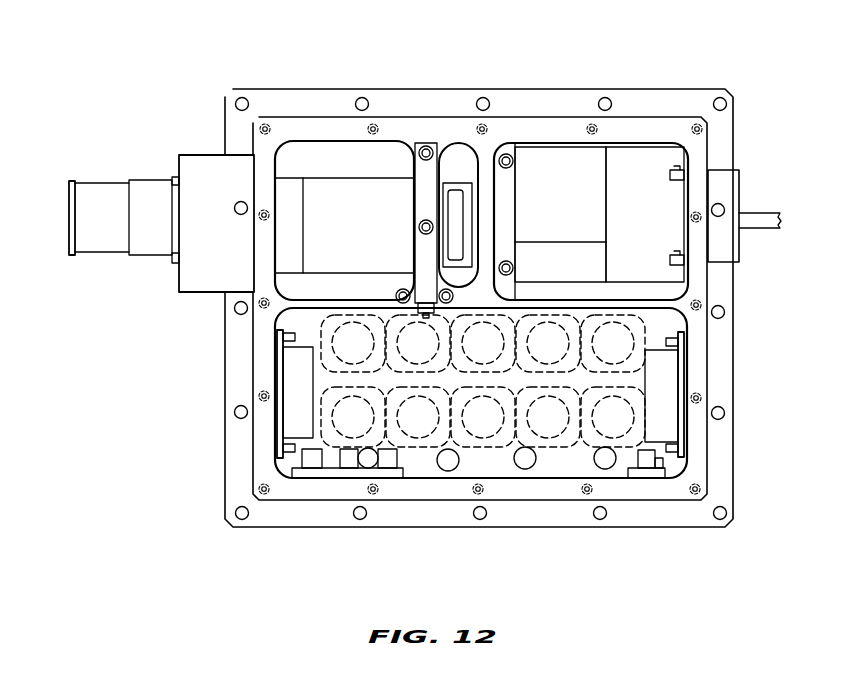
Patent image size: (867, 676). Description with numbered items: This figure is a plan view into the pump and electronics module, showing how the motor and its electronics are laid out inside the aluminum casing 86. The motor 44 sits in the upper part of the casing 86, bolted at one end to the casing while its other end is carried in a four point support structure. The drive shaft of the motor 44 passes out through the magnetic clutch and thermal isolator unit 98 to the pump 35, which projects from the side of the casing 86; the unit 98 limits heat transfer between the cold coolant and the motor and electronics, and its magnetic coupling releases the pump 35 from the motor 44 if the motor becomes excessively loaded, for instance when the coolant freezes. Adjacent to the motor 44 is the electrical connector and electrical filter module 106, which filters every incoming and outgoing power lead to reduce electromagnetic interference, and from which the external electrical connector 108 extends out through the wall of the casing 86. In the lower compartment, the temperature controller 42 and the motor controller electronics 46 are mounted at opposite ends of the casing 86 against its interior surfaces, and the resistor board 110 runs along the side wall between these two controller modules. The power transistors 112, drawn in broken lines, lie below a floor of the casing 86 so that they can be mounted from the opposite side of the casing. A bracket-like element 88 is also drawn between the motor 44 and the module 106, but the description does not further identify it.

The pump 35 is at (148, 178).
The temperature controller 42 is at (663, 390).
The motor 44 is at (334, 180).
The motor controller electronics 46 is at (288, 375).
The aluminum casing 86 is at (224, 470).
The central module 88 is at (442, 183).
The magnetic clutch and thermal isolator unit 98 is at (197, 297).
The electrical connector and electrical filter module 106 is at (549, 162).
The external electrical connector 108 is at (724, 192).
The resistor board 110 is at (565, 485).
The power transistors 112 is at (485, 423).